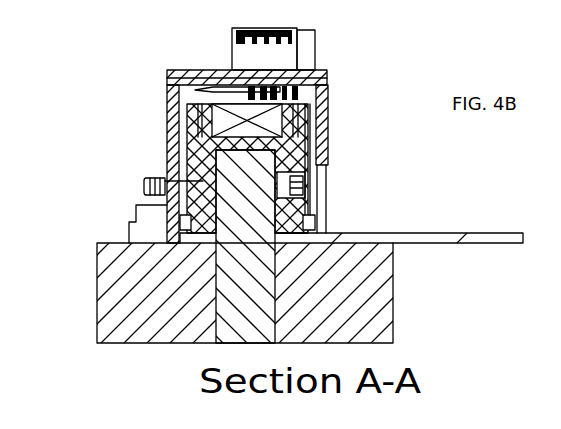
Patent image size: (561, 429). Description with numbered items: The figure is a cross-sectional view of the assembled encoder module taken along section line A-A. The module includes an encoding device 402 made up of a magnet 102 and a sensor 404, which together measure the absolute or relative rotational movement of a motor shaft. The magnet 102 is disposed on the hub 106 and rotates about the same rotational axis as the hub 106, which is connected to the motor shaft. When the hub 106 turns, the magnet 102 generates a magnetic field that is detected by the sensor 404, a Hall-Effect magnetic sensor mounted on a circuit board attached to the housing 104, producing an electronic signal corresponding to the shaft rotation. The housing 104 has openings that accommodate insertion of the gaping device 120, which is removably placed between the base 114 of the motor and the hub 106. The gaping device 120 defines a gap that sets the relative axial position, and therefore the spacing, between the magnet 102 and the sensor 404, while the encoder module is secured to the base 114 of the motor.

The encoding device 402 is at (280, 214).
The sensor 404 is at (195, 90).
The magnet 102 is at (230, 116).
The housing 104 is at (328, 88).
The hub 106 is at (157, 181).
The base 114 is at (370, 320).
The gaping device 120 is at (452, 233).